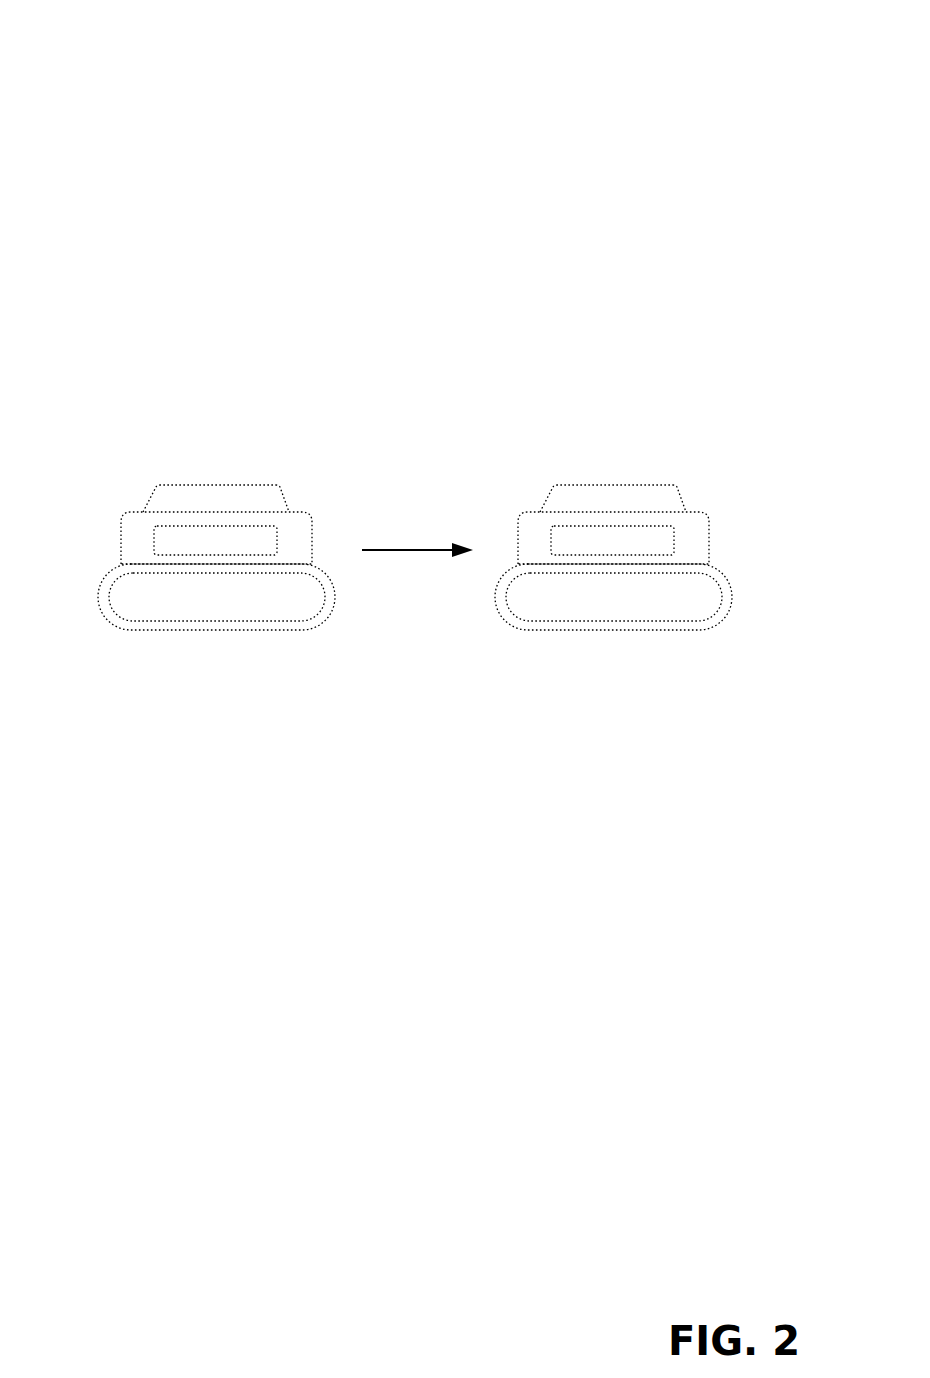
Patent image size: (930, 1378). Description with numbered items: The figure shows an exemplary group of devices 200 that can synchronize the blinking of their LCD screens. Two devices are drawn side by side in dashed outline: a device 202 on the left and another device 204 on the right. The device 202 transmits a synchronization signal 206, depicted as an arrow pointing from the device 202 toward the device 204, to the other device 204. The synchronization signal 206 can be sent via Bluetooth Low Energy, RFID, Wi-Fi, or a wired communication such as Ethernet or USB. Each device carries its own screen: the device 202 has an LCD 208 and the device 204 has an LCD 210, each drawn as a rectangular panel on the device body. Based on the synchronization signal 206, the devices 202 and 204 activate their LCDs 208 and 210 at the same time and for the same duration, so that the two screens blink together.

The vehicle update process 200 is at (128, 53).
The device 202 is at (152, 492).
The device 204 is at (552, 486).
The synchronization signal 206 is at (432, 551).
The LCD 208 is at (157, 538).
The LCD 210 is at (675, 538).